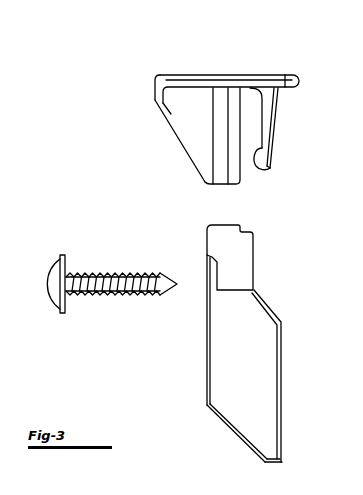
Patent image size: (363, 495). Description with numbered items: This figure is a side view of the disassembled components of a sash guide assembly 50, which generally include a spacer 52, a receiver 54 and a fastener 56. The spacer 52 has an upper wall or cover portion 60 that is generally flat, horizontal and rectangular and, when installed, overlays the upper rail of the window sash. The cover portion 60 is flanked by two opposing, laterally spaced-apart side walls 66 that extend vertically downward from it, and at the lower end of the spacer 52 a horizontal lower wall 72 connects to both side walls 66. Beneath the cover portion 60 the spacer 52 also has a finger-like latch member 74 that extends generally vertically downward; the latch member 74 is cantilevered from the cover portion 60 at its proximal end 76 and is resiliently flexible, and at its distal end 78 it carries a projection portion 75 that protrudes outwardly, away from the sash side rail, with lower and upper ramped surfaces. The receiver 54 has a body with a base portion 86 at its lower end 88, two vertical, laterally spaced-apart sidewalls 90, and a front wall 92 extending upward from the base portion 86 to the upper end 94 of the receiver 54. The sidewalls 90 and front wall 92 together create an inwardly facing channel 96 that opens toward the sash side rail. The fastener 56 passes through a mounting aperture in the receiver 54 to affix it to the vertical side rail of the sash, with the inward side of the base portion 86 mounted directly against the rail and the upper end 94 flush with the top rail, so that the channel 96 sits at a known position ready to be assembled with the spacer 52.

The sash guide assembly 50 is at (115, 107).
The spacer 52 is at (231, 120).
The receiver 54 is at (237, 347).
The fastener 56 is at (52, 276).
The cover portion 60 is at (282, 86).
The side walls 66 is at (197, 140).
The lower wall 72 is at (222, 184).
The latch member 74 is at (275, 124).
The projection portion 75 is at (266, 148).
The proximal end 76 is at (291, 101).
The distal end 78 is at (277, 184).
The base portion 86 is at (268, 463).
The lower end 88 is at (222, 431).
The sidewalls 90 is at (250, 352).
The front wall 92 is at (207, 362).
The upper end 94 is at (247, 265).
The channel 96 is at (281, 396).